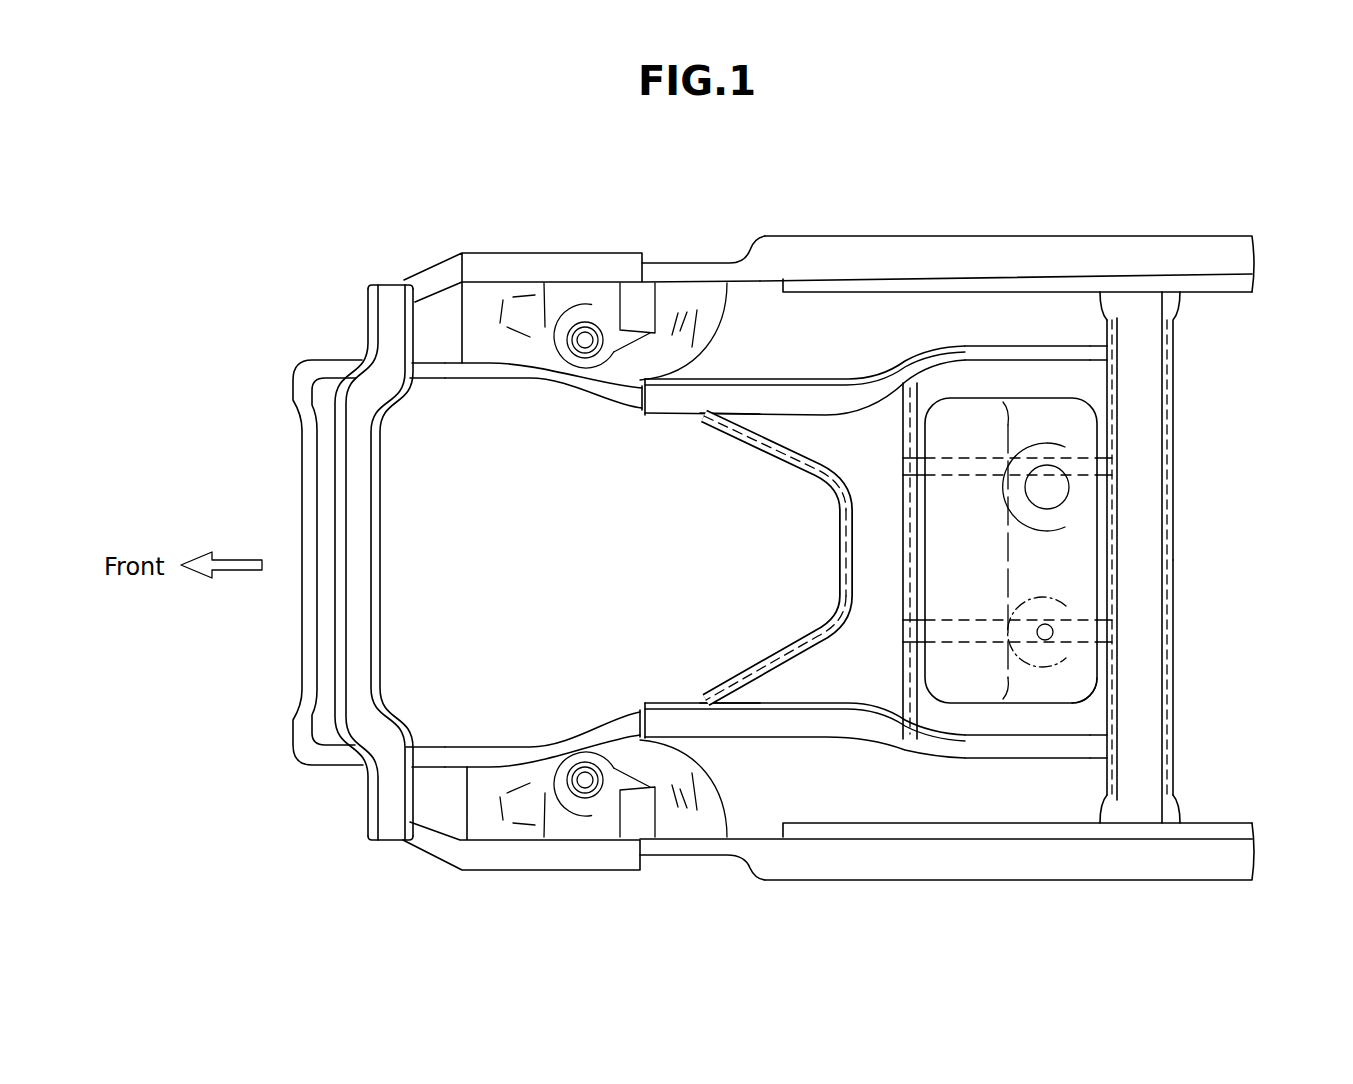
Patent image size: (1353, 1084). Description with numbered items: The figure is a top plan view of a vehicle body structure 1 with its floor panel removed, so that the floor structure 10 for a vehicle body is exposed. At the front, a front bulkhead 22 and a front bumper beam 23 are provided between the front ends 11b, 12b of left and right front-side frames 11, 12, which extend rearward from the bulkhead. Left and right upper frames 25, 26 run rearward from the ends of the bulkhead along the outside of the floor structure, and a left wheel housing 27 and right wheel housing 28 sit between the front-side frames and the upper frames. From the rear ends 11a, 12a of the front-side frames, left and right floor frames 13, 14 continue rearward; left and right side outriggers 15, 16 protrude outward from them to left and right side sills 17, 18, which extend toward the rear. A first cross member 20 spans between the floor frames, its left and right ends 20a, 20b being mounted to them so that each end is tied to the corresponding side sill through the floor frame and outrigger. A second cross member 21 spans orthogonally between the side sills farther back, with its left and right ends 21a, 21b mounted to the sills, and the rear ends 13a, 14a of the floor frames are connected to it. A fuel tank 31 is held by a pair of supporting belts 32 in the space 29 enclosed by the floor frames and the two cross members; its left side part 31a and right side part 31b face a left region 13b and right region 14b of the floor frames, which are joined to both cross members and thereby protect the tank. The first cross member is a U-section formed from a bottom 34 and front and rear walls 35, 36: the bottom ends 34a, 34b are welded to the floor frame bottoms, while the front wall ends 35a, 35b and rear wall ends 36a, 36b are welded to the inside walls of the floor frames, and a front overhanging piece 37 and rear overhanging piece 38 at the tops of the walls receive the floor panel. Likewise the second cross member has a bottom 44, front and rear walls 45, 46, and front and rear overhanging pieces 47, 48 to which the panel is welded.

The vehicle body structure 1 is at (294, 196).
The floor structure for a vehicle body 10 is at (442, 350).
The left front-side frame 11 is at (553, 741).
The rear end of left front-side frame 11a is at (622, 718).
The front end of left front-side frame 11b is at (420, 750).
The right front-side frame 12 is at (545, 379).
The rear end of right front-side frame 12a is at (630, 404).
The front end of right front-side frame 12b is at (422, 370).
The left floor frame 13 is at (823, 737).
The rear end of left floor frame 13a is at (1112, 742).
The left region of left floor frame 13b is at (1023, 745).
The right floor frame 14 is at (816, 383).
The rear end of right floor frame 14a is at (1117, 355).
The right region of right floor frame 14b is at (1005, 353).
The left side outrigger 15 is at (750, 822).
The right side outrigger 16 is at (750, 298).
The left side sill 17 is at (945, 870).
The right side sill 18 is at (960, 248).
The first cross member 20 is at (832, 552).
The left end of first cross member 20a is at (803, 693).
The right end of first cross member 20b is at (788, 427).
The second cross member 21 is at (1187, 537).
The left end of second cross member 21a is at (1138, 812).
The right end of second cross member 21b is at (1137, 303).
The front bulkhead 22 is at (352, 515).
The front bumper beam 23 is at (308, 598).
The left upper frame 25 is at (600, 861).
The right upper frame 26 is at (592, 252).
The left wheel housing 27 is at (556, 822).
The right wheel housing 28 is at (548, 281).
The space 29 is at (1095, 713).
The fuel tank 31 is at (1083, 517).
The left side part of fuel tank 31a is at (967, 704).
The right side part of fuel tank 31b is at (1048, 399).
The supporting belt 32 is at (1103, 465).
The bottom of first cross member 34 is at (862, 471).
The left end of bottom 34a is at (857, 683).
The right end of bottom 34b is at (850, 420).
The front wall of first cross member 35 is at (833, 613).
The left end of front wall 35a is at (742, 703).
The right end of front wall 35b is at (742, 415).
The rear wall of first cross member 36 is at (912, 552).
The left end of rear wall 36a is at (923, 687).
The right end of rear wall 36b is at (905, 362).
The front overhanging piece 37 is at (765, 453).
The rear overhanging piece 38 is at (913, 522).
The bottom of second cross member 44 is at (1142, 658).
The front wall of second cross member 45 is at (1113, 540).
The rear wall of second cross member 46 is at (1170, 577).
The front overhanging piece 47 is at (1108, 776).
The rear overhanging piece 48 is at (1172, 783).